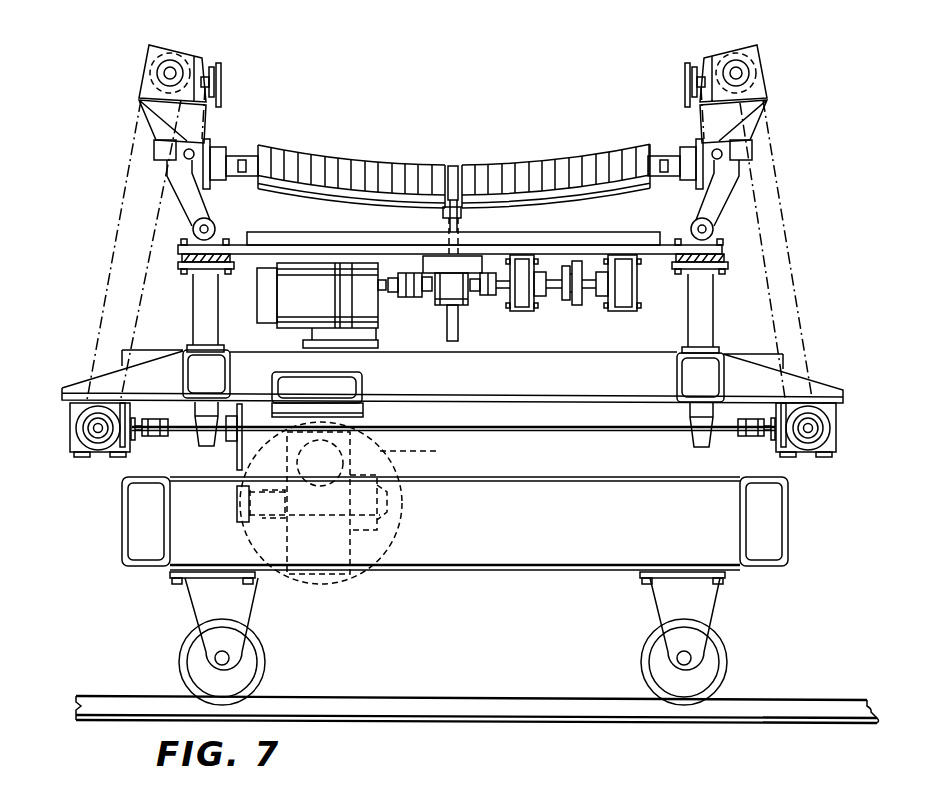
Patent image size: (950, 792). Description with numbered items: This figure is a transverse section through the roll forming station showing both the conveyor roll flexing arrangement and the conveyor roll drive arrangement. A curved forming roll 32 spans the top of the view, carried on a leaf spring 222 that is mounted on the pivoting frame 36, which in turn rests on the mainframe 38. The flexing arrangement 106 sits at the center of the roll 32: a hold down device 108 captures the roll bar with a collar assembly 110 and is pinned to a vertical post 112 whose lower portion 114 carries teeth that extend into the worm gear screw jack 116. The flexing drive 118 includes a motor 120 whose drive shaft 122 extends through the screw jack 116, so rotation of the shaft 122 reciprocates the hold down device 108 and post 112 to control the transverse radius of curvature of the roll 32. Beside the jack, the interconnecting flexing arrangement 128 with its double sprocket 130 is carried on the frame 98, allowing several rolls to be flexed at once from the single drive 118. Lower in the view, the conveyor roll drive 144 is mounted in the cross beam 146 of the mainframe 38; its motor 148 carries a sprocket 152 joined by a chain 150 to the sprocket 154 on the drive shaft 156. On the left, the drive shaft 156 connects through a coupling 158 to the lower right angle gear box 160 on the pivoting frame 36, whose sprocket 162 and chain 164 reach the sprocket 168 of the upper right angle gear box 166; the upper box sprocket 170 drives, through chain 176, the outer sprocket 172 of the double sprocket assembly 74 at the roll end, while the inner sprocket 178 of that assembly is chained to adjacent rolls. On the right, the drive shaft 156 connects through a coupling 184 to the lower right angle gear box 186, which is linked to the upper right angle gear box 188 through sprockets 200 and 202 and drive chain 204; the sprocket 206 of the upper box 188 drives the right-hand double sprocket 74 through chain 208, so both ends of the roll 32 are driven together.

The forming roll 32 is at (358, 158).
The pivoting frame 36 is at (728, 356).
The mainframe 38 is at (790, 520).
The double sprocket assembly 74 is at (214, 146).
The frame 98 is at (660, 245).
The flexing arrangement 106 is at (429, 311).
The hold down device 108 is at (443, 215).
The collar assembly 110 is at (452, 165).
The vertical post 112 is at (464, 252).
The lower portion 114 is at (458, 333).
The screw jack 116 is at (466, 304).
The flexing drive 118 is at (282, 329).
The motor 120 is at (302, 268).
The drive shaft 122 is at (392, 278).
The interconnecting flexing arrangement 128 is at (575, 313).
The double sprocket 130 is at (584, 301).
The conveyor roll drive 144 is at (420, 516).
The cross beam 146 is at (485, 478).
The motor 148 is at (417, 456).
The chain 150 is at (237, 457).
The sprocket 152 is at (237, 526).
The sprocket 154 is at (239, 445).
The drive shaft 156 is at (555, 426).
The coupling 158 is at (155, 437).
The lower right angle gear box 160 is at (75, 420).
The sprocket 162 is at (96, 456).
The chain 164 is at (107, 276).
The upper right angle gear box 166 is at (139, 80).
The sprocket 168 is at (173, 61).
The sprocket 170 is at (219, 64).
The outer sprocket 172 is at (205, 178).
The chain 176 is at (220, 113).
The inner sprocket 178 is at (240, 152).
The coupling 184 is at (830, 456).
The lower right angle gear box 186 is at (748, 433).
The upper right angle gear box 188 is at (750, 48).
The sprocket 200 is at (838, 423).
The sprocket 202 is at (767, 62).
The drive chain 204 is at (791, 216).
The sprocket 206 is at (685, 79).
The chain 208 is at (696, 120).
The leaf spring 222 is at (205, 263).